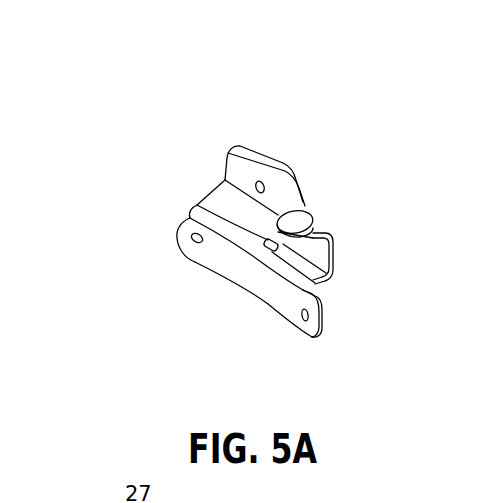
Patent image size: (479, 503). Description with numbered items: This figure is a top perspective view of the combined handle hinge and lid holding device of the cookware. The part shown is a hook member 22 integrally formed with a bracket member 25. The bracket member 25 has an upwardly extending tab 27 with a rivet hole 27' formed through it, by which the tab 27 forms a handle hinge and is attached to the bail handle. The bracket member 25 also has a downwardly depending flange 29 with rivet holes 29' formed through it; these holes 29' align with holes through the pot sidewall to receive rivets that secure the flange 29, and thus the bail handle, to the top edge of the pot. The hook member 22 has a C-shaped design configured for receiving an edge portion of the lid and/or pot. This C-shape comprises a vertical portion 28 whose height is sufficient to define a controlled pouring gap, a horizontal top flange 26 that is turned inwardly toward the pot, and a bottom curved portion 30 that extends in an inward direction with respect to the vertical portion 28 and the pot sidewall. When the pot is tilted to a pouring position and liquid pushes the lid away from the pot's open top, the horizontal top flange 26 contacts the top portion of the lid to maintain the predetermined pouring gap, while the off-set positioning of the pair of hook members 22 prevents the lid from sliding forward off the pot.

The hook member 22 is at (313, 183).
The bracket member 25 is at (163, 204).
The horizontal top flange 26 is at (303, 226).
The upwardly extending tab 27 is at (265, 137).
The rivet hole 27' is at (204, 136).
The vertical portion 28 is at (323, 252).
The downwardly depending flange 29 is at (232, 311).
The rivet holes 29' is at (215, 300).
The bottom curved portion 30 is at (320, 282).